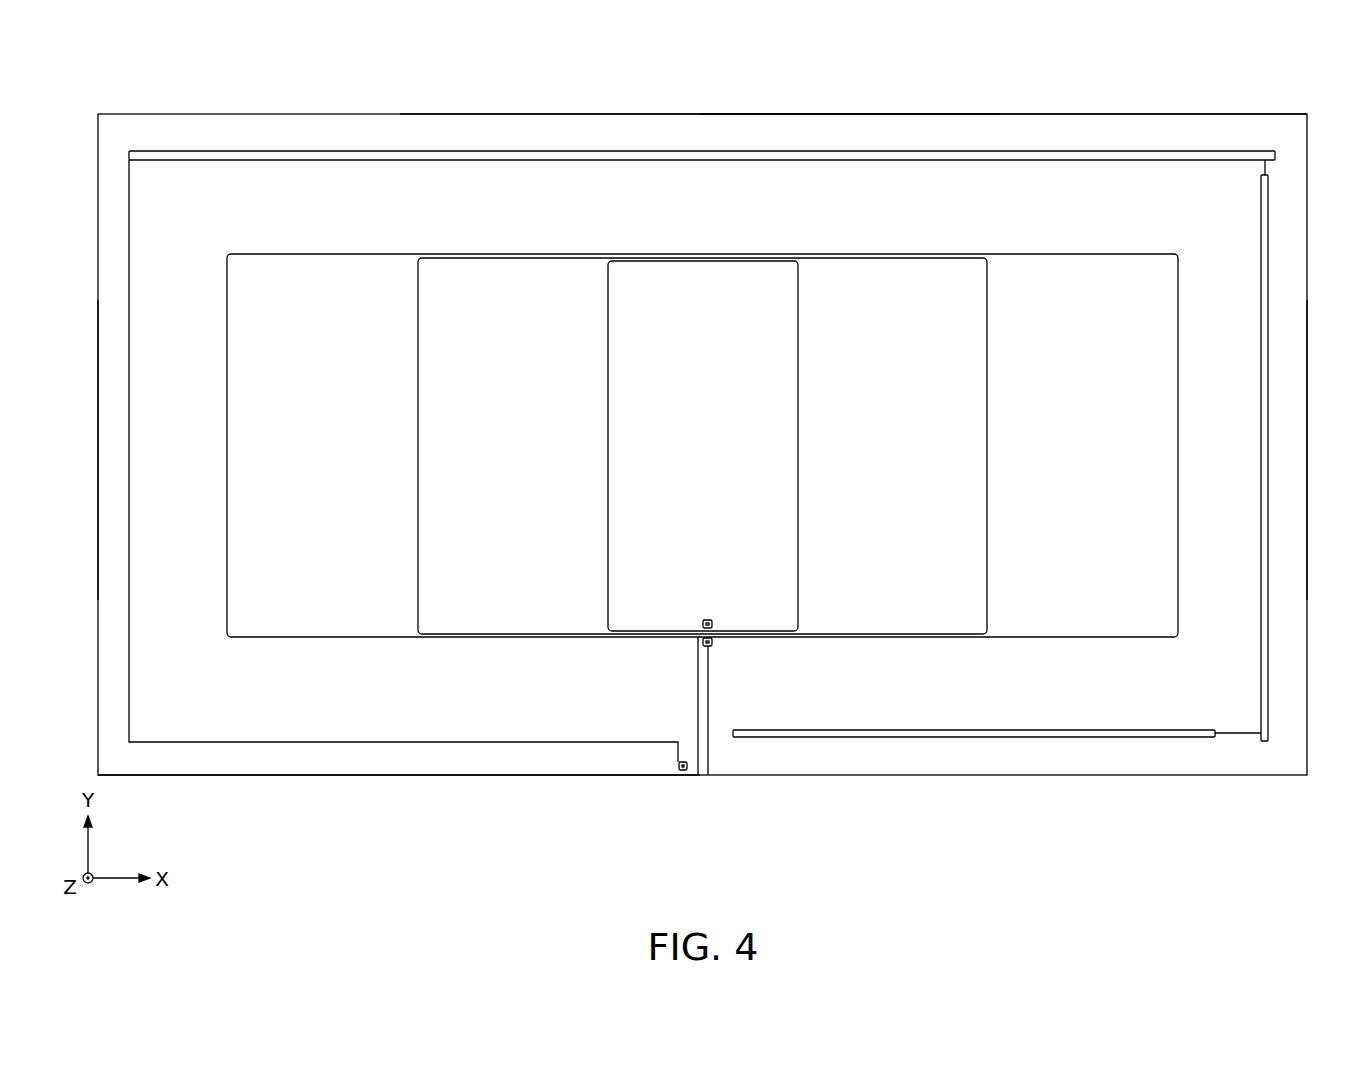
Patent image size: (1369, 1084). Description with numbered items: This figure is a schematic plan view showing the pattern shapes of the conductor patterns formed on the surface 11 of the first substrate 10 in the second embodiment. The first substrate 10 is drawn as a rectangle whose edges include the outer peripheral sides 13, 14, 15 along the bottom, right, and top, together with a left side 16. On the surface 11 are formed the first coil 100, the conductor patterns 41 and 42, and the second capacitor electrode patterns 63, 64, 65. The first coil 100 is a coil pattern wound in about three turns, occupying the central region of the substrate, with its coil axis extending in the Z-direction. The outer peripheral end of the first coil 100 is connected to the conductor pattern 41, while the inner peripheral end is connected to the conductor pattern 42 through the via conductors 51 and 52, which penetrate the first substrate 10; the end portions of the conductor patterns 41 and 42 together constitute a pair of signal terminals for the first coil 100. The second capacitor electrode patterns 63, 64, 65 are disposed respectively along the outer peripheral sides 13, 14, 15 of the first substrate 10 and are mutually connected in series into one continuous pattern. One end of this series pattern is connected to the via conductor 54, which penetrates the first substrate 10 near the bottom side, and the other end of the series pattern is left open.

The first substrate 10 is at (1282, 112).
The surface 11 is at (1185, 138).
The outer peripheral side 13 is at (536, 777).
The outer peripheral side 14 is at (1307, 422).
The outer peripheral side 15 is at (768, 114).
The left side of housing 16 is at (98, 466).
The conductor pattern 41 is at (698, 690).
The conductor pattern 42 is at (709, 690).
The via conductor 51 is at (708, 618).
The via conductor 52 is at (714, 642).
The via conductor 54 is at (683, 772).
The second capacitor electrode pattern 63 is at (973, 729).
The second capacitor electrode pattern 64 is at (1261, 460).
The second capacitor electrode pattern 65 is at (700, 162).
The first coil 100 is at (1067, 235).